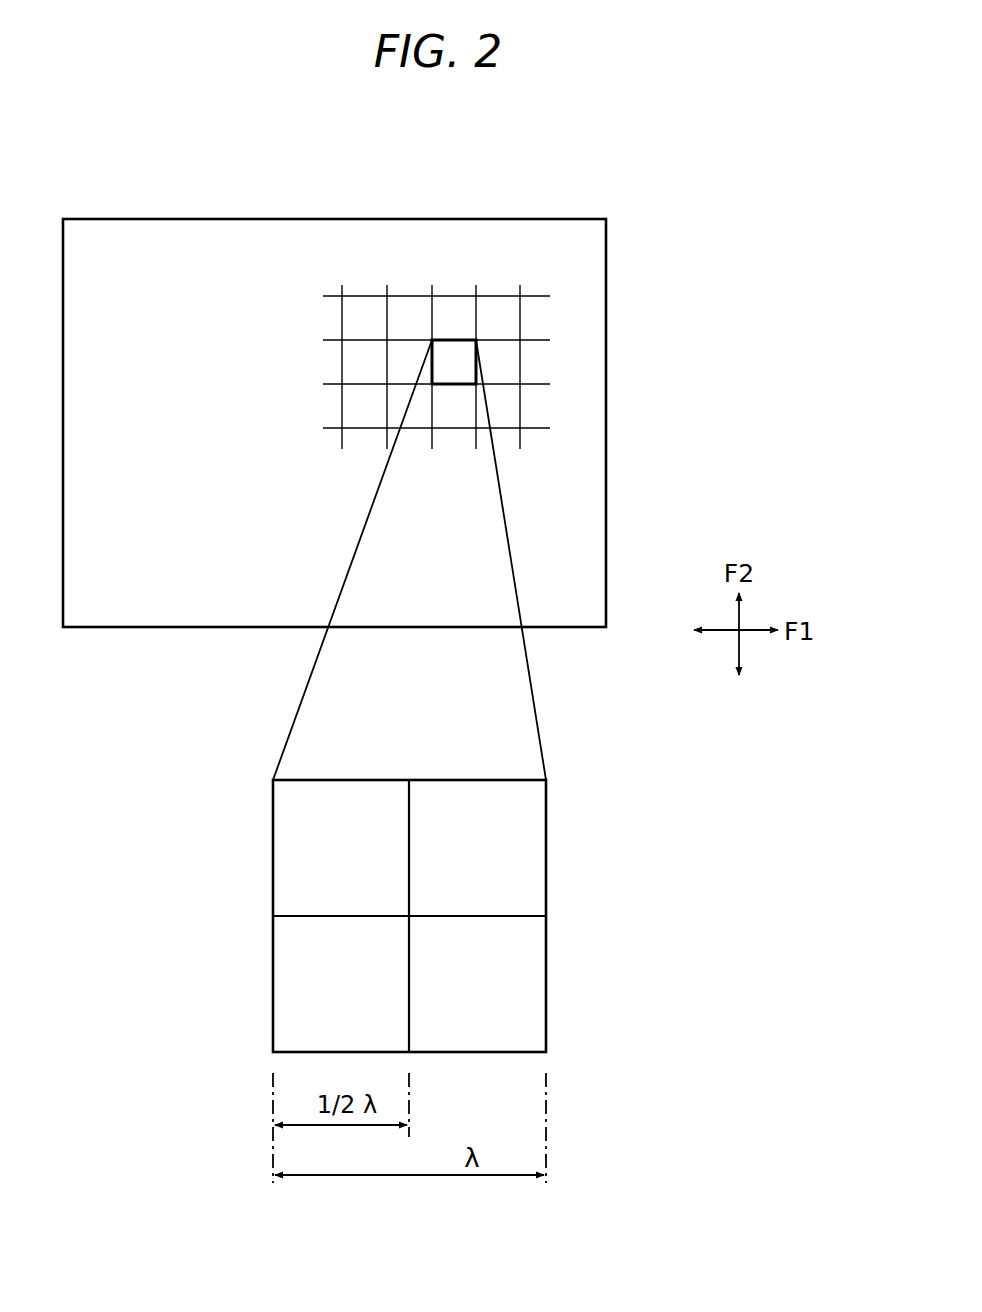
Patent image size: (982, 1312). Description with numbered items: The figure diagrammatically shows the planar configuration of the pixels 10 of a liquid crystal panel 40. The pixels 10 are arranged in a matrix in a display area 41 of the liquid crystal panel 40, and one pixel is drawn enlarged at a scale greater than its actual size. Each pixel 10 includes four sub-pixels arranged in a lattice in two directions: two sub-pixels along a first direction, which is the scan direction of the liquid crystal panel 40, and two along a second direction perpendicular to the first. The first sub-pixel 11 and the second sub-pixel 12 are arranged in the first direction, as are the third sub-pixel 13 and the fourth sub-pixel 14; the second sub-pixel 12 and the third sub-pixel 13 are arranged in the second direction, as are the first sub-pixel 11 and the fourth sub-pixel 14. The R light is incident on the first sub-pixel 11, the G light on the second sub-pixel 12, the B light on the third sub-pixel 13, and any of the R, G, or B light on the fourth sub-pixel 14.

The liquid crystal panel 40 is at (132, 203).
The display area 41 is at (130, 425).
The pixel 10 is at (458, 338).
The first sub-pixel 11 is at (530, 940).
The second sub-pixel 12 is at (288, 1013).
The third sub-pixel 13 is at (288, 886).
The fourth sub-pixel 14 is at (530, 811).